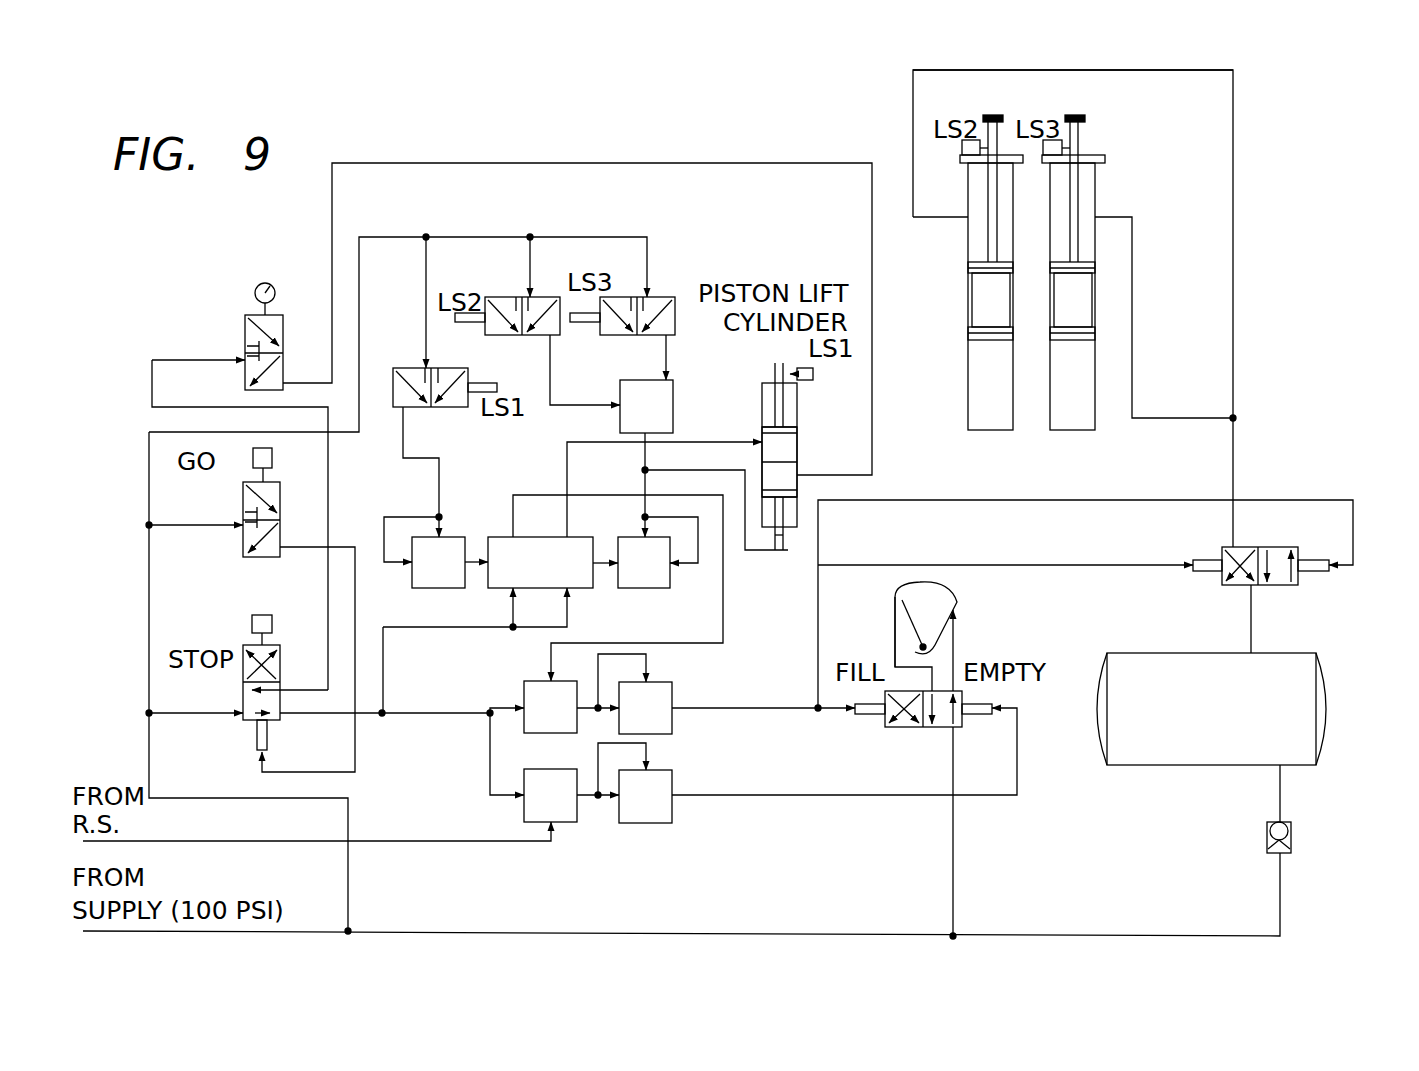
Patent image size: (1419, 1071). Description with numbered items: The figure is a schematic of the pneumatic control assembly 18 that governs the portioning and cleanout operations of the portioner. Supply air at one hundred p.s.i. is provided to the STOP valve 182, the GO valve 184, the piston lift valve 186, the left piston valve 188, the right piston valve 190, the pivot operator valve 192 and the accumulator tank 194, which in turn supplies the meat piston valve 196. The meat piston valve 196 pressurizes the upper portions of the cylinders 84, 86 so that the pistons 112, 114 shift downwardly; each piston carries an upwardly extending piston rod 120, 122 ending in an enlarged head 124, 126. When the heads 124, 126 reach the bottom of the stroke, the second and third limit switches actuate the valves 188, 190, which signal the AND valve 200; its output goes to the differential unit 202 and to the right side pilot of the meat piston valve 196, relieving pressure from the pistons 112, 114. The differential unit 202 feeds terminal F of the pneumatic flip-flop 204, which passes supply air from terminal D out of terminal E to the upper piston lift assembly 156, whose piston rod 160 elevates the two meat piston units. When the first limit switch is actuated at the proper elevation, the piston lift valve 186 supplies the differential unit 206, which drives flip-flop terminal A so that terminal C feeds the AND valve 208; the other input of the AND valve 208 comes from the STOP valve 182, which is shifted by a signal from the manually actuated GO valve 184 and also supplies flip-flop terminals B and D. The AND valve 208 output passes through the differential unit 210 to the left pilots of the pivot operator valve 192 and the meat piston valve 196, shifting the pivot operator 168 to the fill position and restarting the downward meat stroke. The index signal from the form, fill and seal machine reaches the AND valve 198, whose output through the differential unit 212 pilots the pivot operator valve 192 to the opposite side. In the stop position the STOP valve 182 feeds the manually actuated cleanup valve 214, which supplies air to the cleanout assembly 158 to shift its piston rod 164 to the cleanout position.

The pneumatic control assembly 18 is at (1255, 263).
The cylinder 84 is at (968, 418).
The cylinder 86 is at (1095, 428).
The piston 112 is at (980, 310).
The piston 114 is at (1068, 300).
The piston rod 120 is at (997, 130).
The piston rod 122 is at (1080, 138).
The head 124 is at (1000, 115).
The head 126 is at (1085, 115).
The upper piston lift assembly 156 is at (772, 452).
The cleanout assembly 158 is at (780, 483).
The piston rod 160 is at (775, 370).
The piston rod 164 is at (783, 535).
The pivot operator 168 is at (950, 585).
The STOP valve 182 is at (243, 705).
The GO valve 184 is at (243, 517).
The piston lift valve 186 is at (408, 370).
The left piston valve 188 is at (503, 297).
The right piston valve 190 is at (652, 292).
The pivot operator valve 192 is at (910, 727).
The accumulator tank 194 is at (1248, 640).
The meat piston valve 196 is at (1228, 580).
The AND valve 198 is at (565, 822).
The AND valve 200 is at (640, 380).
The differential unit 202 is at (637, 537).
The pneumatic flip-flop 204 is at (575, 590).
The differential unit 206 is at (447, 537).
The AND valve 208 is at (524, 700).
The differential unit 210 is at (672, 705).
The differential unit 212 is at (648, 823).
The cleanup valve 214 is at (243, 348).